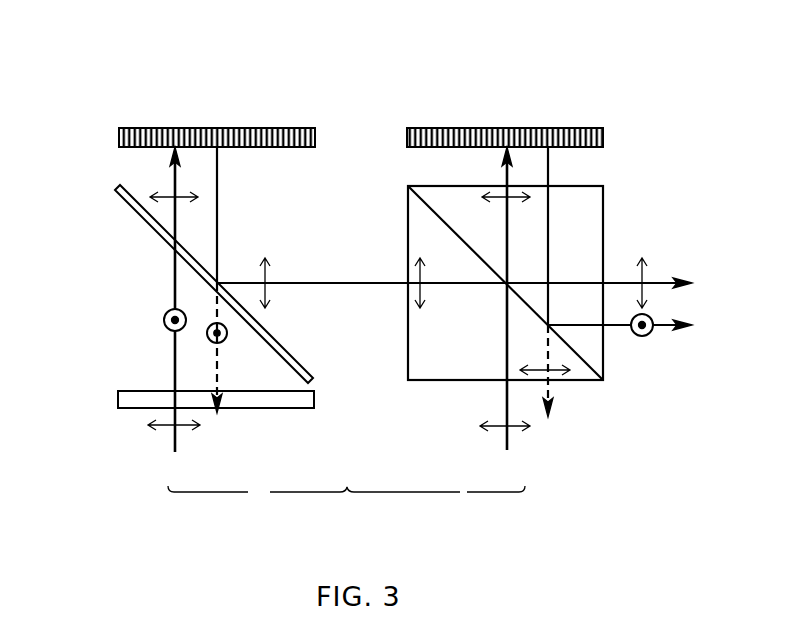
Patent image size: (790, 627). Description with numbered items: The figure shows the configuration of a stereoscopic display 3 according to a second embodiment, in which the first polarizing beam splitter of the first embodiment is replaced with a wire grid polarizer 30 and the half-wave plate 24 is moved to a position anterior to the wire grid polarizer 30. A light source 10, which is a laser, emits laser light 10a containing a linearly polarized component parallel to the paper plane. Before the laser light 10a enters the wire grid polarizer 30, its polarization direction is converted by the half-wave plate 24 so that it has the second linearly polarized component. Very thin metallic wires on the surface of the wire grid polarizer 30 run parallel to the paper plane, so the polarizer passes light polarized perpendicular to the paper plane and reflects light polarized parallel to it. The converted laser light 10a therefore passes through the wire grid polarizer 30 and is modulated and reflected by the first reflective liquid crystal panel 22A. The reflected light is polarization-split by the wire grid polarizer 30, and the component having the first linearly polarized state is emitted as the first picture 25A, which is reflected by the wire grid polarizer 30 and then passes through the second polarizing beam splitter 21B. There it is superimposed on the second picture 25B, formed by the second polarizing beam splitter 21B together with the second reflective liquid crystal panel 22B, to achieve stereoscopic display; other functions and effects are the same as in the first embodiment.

The stereoscopic display 3 is at (633, 99).
The first reflective liquid crystal panel 22A is at (131, 128).
The second reflective liquid crystal panel 22B is at (477, 128).
The laser light 10a is at (165, 411).
The wire grid polarizer 30 is at (128, 209).
The λ/2 wave plate 24 is at (118, 398).
The second polarizing beam splitter 21B is at (592, 226).
The first picture 25A is at (475, 283).
The second picture 25B is at (640, 326).
The light source 10 is at (346, 508).